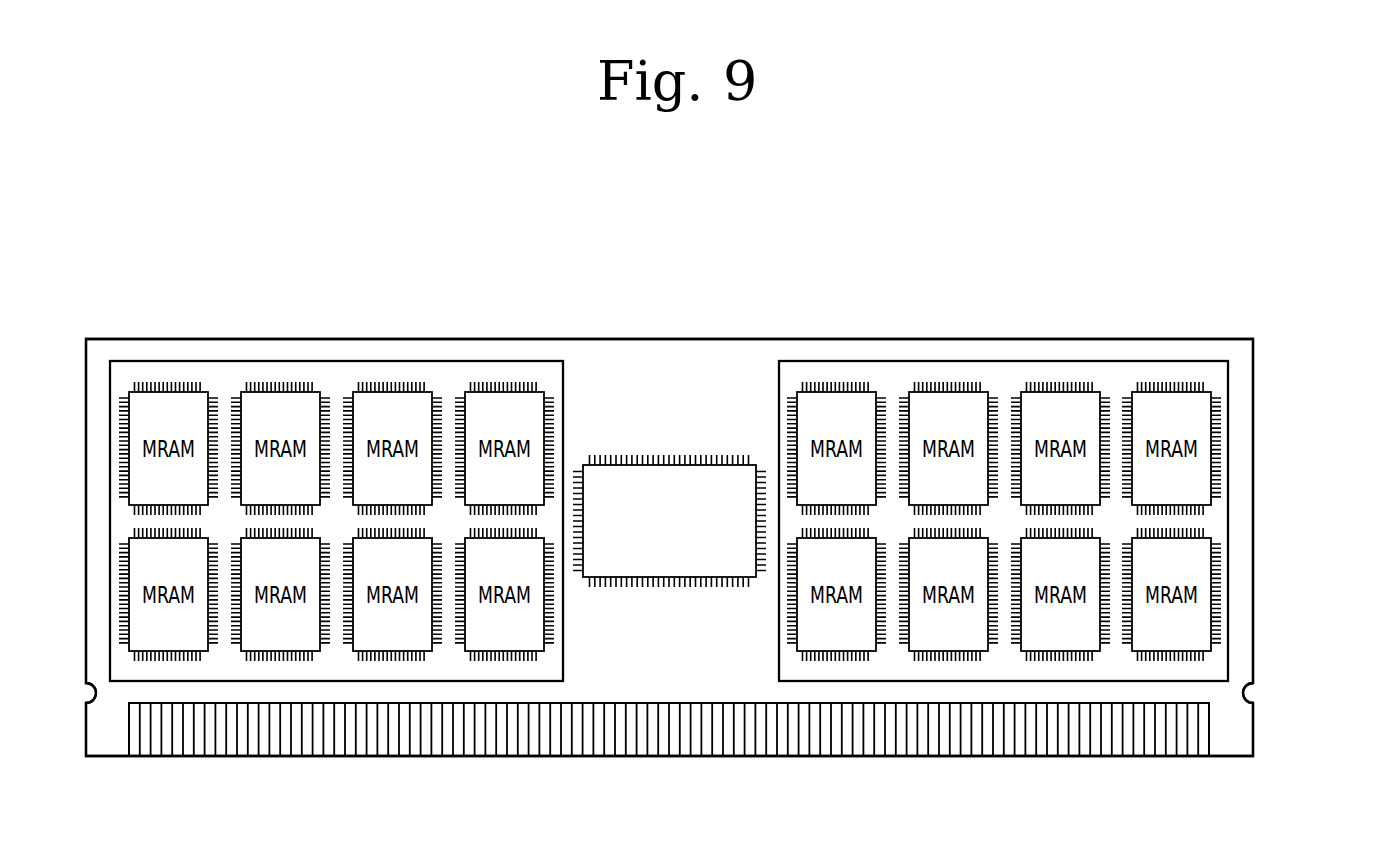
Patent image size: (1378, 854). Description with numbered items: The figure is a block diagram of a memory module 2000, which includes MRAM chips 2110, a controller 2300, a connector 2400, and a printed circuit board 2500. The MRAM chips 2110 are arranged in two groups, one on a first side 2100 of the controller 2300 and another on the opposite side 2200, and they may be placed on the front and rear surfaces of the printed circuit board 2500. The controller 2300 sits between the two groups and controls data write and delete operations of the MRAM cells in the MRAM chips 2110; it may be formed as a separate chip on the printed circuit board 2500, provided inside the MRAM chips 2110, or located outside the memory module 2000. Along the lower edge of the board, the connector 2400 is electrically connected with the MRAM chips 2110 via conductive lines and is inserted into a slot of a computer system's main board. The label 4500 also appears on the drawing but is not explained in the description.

The memory module 2000 is at (1098, 253).
The first memory device group 2100 is at (387, 487).
The MRAM memory device 2110 is at (560, 448).
The second memory device group 2200 is at (1227, 332).
The controller 2300 is at (678, 588).
The connector 2400 is at (727, 748).
The printed circuit board 2500 is at (1253, 509).
The top edge of board 4500 is at (678, 338).